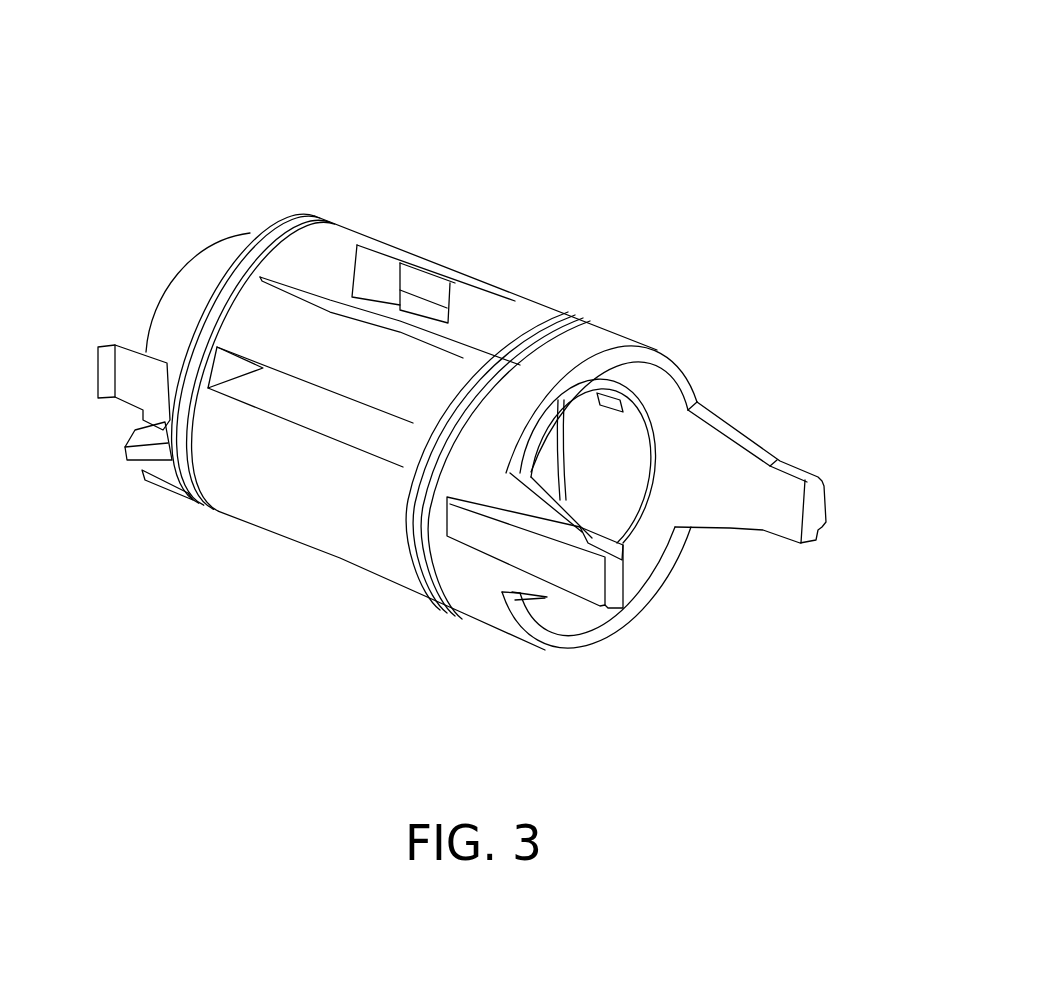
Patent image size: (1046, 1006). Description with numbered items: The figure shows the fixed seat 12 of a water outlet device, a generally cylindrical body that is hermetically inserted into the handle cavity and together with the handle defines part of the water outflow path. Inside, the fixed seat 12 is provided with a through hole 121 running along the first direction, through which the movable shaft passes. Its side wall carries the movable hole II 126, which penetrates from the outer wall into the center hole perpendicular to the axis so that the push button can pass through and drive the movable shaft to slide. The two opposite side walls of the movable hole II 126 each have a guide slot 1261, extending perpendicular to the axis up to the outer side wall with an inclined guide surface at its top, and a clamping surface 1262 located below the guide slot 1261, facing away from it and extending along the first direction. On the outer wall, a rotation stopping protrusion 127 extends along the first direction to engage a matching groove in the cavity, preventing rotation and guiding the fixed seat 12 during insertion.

The fixed seat 12 is at (618, 85).
The movable hole II 126 is at (338, 267).
The guide slot 1261 is at (428, 282).
The clamping surface 1262 is at (450, 341).
The through hole 121 is at (602, 477).
The rotation stopping protrusion 127 is at (522, 550).